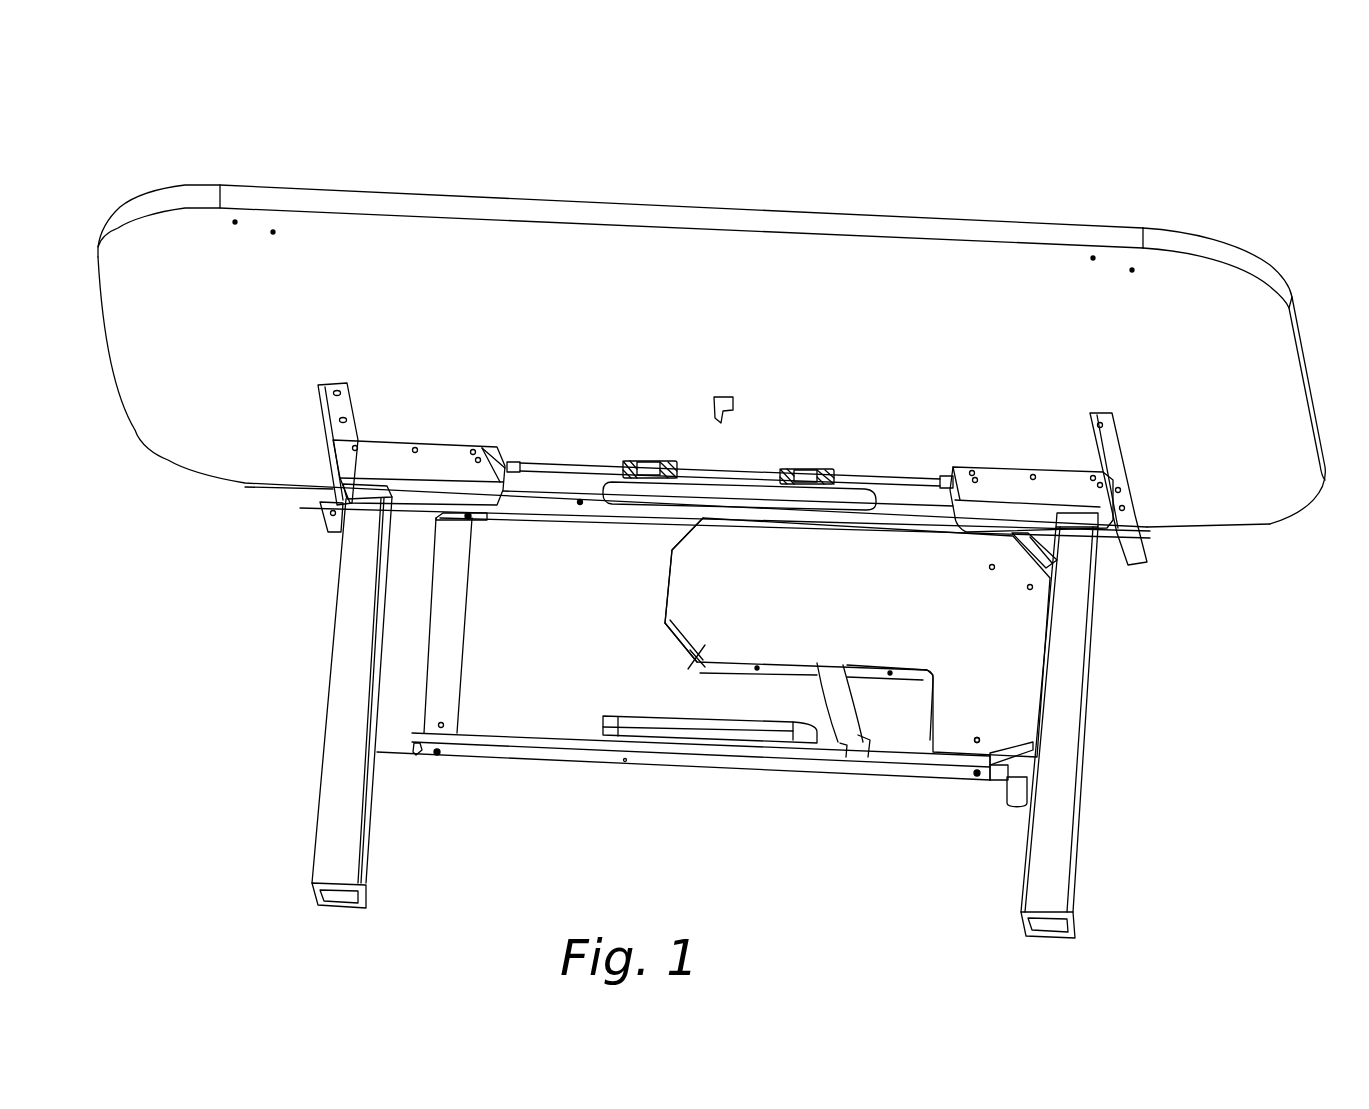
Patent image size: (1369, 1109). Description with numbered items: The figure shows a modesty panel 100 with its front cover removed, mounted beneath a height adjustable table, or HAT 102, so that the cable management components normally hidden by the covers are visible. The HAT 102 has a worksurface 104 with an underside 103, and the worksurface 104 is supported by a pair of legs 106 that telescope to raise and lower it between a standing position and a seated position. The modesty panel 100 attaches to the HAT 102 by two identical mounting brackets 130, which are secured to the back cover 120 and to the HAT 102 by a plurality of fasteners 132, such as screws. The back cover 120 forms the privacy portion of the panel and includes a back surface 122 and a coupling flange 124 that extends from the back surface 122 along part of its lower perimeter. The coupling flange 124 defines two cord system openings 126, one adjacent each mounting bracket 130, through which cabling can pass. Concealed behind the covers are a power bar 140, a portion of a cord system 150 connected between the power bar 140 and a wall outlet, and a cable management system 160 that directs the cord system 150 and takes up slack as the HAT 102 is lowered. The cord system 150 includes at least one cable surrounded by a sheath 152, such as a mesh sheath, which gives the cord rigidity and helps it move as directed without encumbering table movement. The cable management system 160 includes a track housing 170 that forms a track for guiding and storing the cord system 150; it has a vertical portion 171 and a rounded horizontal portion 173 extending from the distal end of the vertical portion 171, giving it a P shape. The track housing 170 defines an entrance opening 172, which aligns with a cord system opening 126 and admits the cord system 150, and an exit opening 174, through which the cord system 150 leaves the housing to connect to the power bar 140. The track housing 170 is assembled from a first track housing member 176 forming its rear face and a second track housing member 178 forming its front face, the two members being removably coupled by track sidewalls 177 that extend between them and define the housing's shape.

The modesty panel 100 is at (498, 757).
The height adjustable table (HAT) 102 is at (122, 158).
The underside 103 is at (1202, 498).
The worksurface 104 is at (1308, 364).
The legs 106 is at (337, 780).
The back cover 120 is at (397, 668).
The back surface 122 is at (397, 623).
The coupling flange 124 is at (562, 760).
The cord system opening 126 is at (395, 742).
The mounting bracket 130 is at (448, 592).
The fasteners 132 is at (462, 518).
The power bar 140 is at (705, 745).
The cord system 150 is at (862, 737).
The sheath 152 is at (842, 743).
The cable management system 160 is at (1023, 645).
The track housing 170 is at (672, 587).
The vertical portion 171 is at (1012, 710).
The entrance opening 172 is at (998, 776).
The rounded horizontal portion 173 is at (668, 557).
The exit opening 174 is at (850, 674).
The first track housing member 176 is at (668, 636).
The track sidewall 177 is at (735, 670).
The second track housing member 178 is at (700, 655).